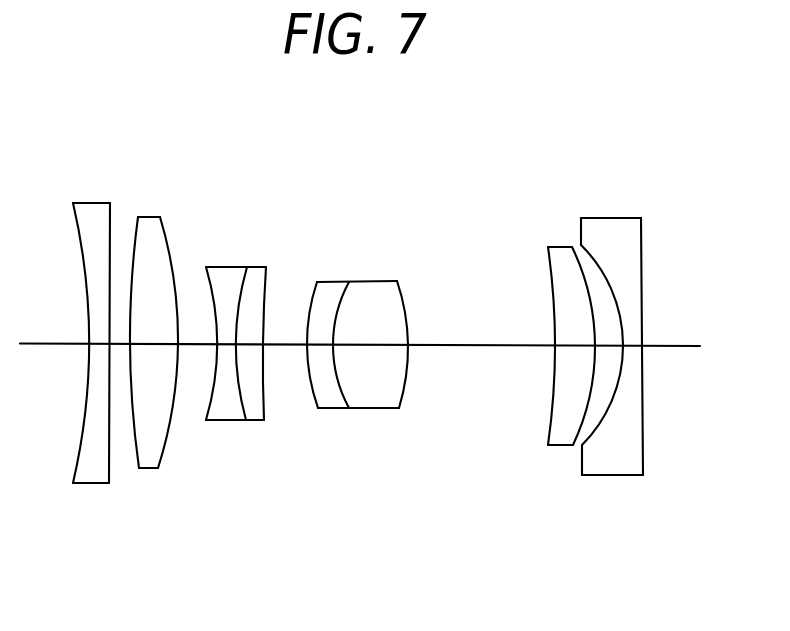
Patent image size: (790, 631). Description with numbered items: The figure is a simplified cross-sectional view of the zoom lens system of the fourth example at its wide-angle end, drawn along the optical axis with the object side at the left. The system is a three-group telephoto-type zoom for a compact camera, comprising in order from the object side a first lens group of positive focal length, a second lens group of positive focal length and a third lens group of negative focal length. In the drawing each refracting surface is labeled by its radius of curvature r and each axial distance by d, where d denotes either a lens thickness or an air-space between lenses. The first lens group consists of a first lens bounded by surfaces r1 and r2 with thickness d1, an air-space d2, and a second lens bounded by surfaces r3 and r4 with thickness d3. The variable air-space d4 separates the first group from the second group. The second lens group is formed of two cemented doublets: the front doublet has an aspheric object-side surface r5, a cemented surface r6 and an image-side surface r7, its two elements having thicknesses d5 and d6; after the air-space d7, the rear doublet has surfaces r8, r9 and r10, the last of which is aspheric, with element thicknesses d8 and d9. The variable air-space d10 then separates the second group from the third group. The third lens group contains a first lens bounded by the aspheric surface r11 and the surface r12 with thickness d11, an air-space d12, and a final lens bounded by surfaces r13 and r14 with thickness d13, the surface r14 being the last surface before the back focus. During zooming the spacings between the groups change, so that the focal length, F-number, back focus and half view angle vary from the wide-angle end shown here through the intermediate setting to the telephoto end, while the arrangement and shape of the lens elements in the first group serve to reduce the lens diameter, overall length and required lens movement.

The radius of curvature of first lens surface r1 is at (84, 287).
The radius of curvature of second lens surface r2 is at (113, 302).
The radius of curvature of third lens surface r3 is at (141, 279).
The radius of curvature of fourth lens surface r4 is at (171, 294).
The radius of curvature of fifth lens surface r5 is at (211, 255).
The radius of curvature of sixth lens surface r6 is at (241, 270).
The radius of curvature of seventh lens surface r7 is at (269, 255).
The radius of curvature of eighth lens surface r8 is at (304, 266).
The radius of curvature of ninth lens surface r9 is at (333, 249).
The radius of curvature of tenth lens surface r10 is at (404, 266).
The radius of curvature of eleventh lens surface r11 is at (553, 268).
The radius of curvature of twelfth lens surface r12 is at (591, 284).
The radius of curvature of thirteenth lens surface r13 is at (610, 268).
The radius of curvature of fourteenth lens surface r14 is at (651, 299).
The lens thickness d1 is at (100, 344).
The air-space between lenses d2 is at (119, 344).
The lens thickness d3 is at (158, 344).
The variable air-space d4 is at (199, 344).
The lens thickness d5 is at (228, 344).
The lens thickness d6 is at (257, 344).
The air-space between lenses d7 is at (287, 344).
The lens thickness d8 is at (322, 344).
The lens thickness d9 is at (370, 345).
The variable air-space d10 is at (482, 345).
The lens thickness d11 is at (575, 345).
The air-space between lenses d12 is at (610, 345).
The lens thickness d13 is at (639, 345).